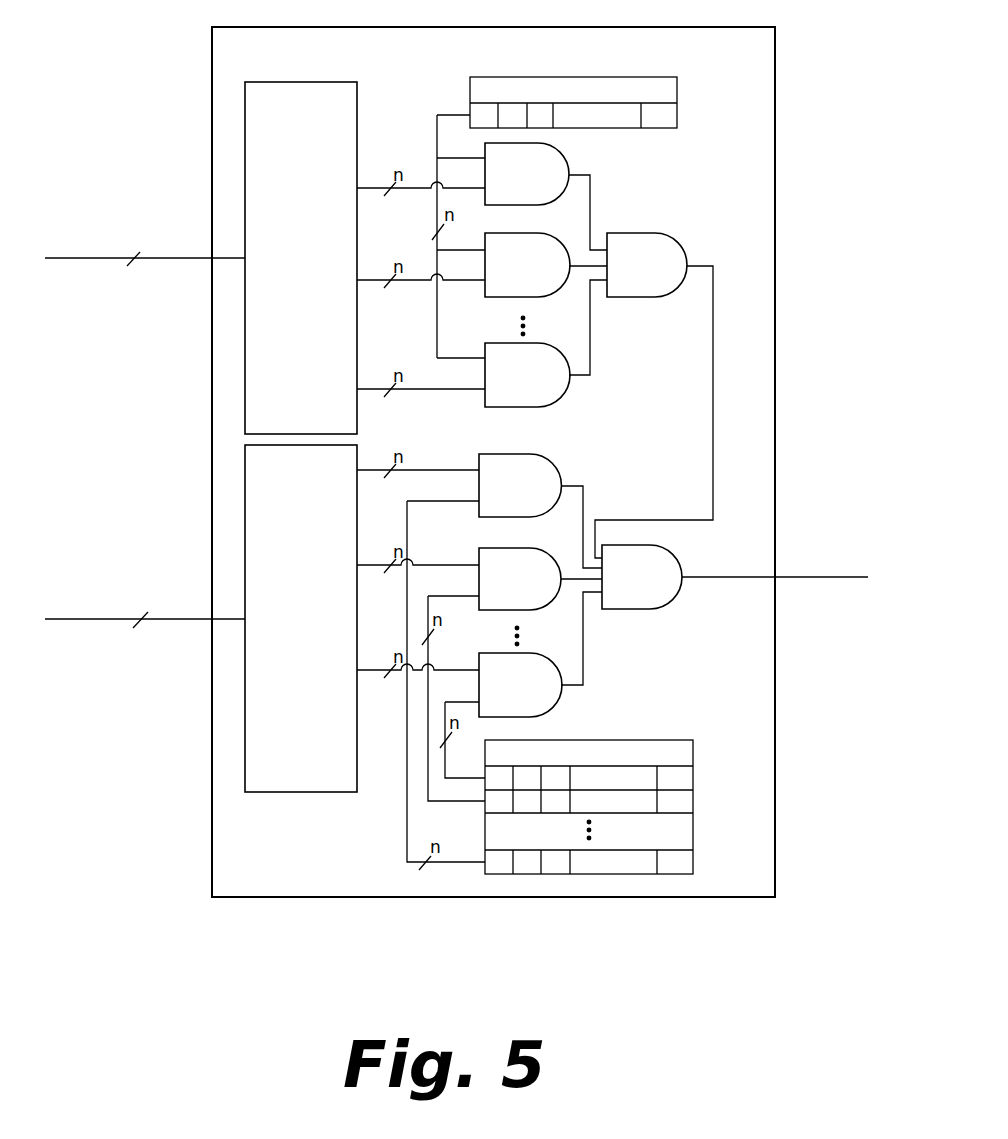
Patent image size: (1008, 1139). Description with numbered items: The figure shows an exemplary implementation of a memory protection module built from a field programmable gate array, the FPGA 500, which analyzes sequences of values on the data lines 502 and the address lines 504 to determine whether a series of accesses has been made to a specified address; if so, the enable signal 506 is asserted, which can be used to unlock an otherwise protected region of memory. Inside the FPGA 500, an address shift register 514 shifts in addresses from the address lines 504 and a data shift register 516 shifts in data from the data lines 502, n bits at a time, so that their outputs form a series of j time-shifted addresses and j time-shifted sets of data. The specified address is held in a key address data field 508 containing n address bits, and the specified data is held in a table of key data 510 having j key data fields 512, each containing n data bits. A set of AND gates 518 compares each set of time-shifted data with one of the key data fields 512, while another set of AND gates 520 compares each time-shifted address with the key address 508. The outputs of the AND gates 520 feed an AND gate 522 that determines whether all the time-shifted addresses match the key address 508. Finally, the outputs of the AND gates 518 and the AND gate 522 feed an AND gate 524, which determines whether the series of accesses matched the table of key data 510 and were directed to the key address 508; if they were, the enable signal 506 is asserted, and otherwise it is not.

The FPGA 500 is at (493, 462).
The data lines 502 is at (118, 621).
The address lines 504 is at (103, 260).
The enable signal 506 is at (818, 579).
The key address data field 508 is at (677, 115).
The table of key data 510 is at (625, 785).
The key data fields 512 is at (693, 775).
The address shift register 514 is at (301, 258).
The data shift register 516 is at (301, 618).
The AND gates 518 is at (520, 585).
The AND gates 520 is at (527, 275).
The AND gate 522 is at (647, 265).
The AND gate 524 is at (642, 577).